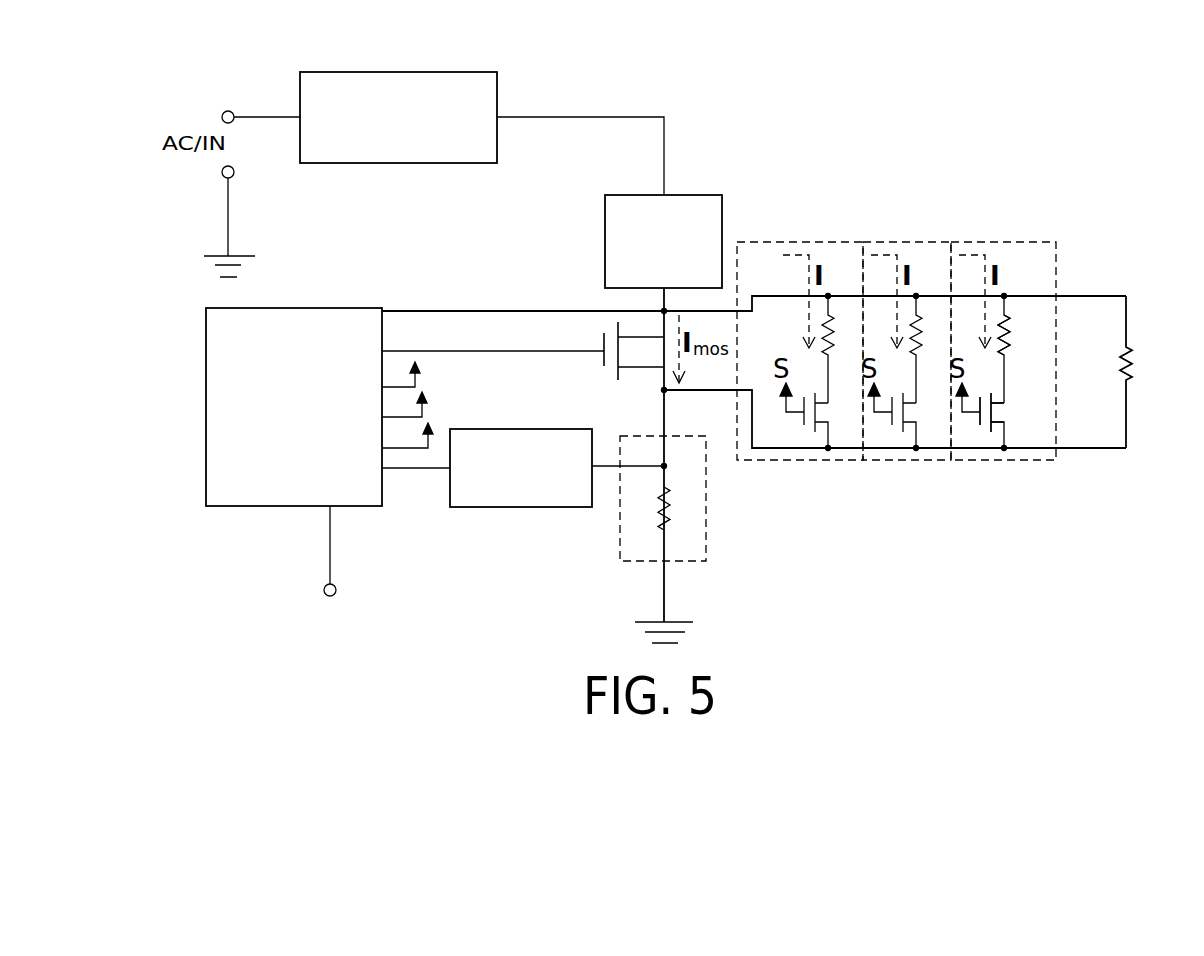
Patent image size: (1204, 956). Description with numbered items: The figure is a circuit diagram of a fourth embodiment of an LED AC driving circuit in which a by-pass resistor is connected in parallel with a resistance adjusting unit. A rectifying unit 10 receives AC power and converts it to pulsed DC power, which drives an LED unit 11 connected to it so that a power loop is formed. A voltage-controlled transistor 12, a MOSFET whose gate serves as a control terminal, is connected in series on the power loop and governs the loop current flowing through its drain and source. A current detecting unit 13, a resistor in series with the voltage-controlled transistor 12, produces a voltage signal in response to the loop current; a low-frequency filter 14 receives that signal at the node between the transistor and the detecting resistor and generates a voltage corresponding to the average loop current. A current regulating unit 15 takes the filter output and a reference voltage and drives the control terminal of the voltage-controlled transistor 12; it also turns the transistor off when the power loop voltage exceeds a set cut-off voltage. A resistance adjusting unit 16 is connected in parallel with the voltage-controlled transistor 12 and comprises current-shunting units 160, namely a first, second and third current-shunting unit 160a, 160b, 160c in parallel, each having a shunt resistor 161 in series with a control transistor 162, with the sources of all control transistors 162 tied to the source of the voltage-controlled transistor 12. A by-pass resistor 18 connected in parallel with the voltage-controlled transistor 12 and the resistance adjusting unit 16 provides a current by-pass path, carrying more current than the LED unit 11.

The rectifying unit 10 is at (383, 72).
The LED unit 11 is at (700, 195).
The voltage-controlled transistor 12 is at (603, 365).
The current detecting unit 13 is at (620, 538).
The low-frequency filter 14 is at (518, 508).
The current regulating unit 15 is at (206, 452).
The resistance adjusting unit 16 is at (931, 353).
The by-pass resistor 18 is at (1130, 348).
The current-shunting unit 160 is at (931, 353).
The first current-shunting unit 160a is at (773, 462).
The second current-shunting unit 160b is at (903, 462).
The third current-shunting unit 160c is at (1037, 388).
The shunt resistor 161 is at (1022, 318).
The control transistor 162 is at (1000, 403).